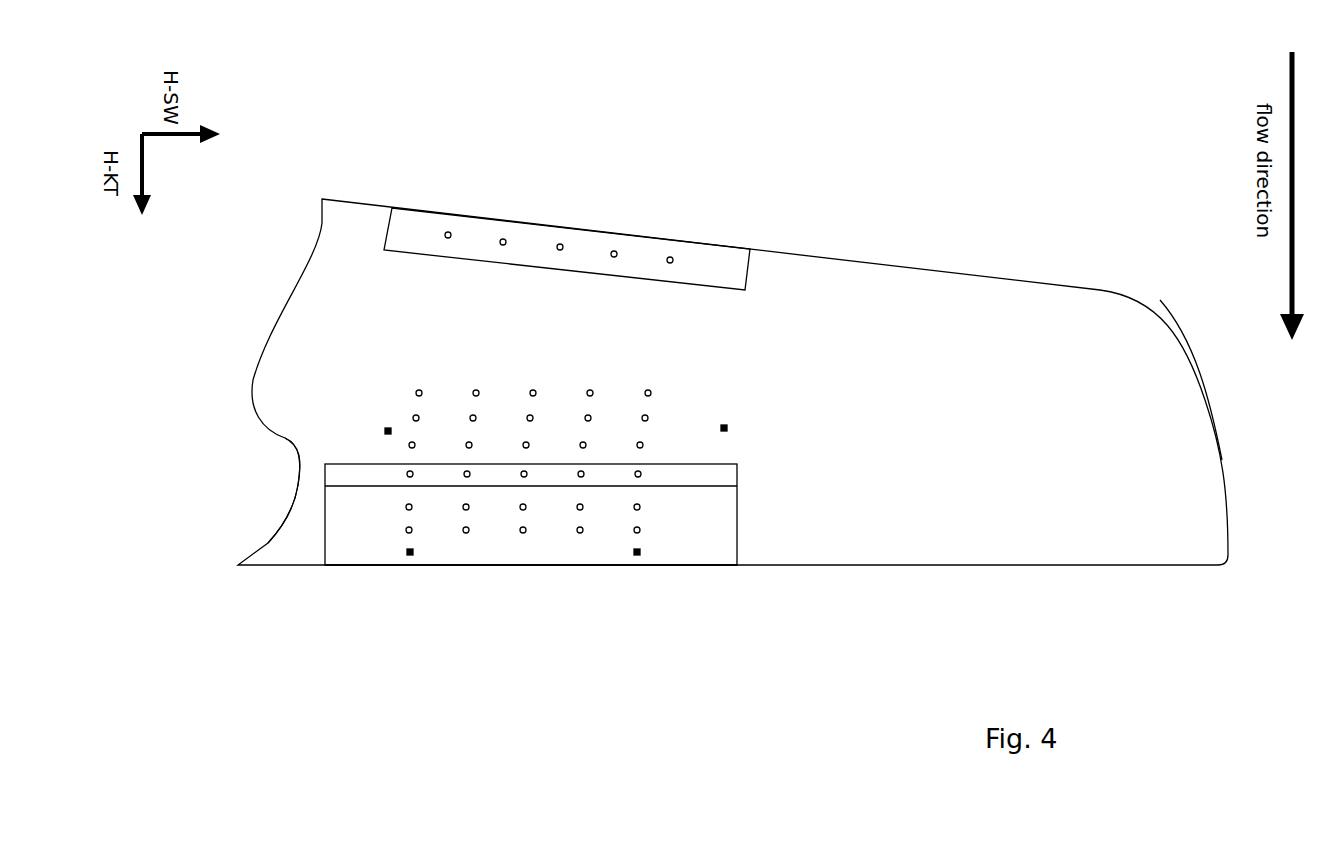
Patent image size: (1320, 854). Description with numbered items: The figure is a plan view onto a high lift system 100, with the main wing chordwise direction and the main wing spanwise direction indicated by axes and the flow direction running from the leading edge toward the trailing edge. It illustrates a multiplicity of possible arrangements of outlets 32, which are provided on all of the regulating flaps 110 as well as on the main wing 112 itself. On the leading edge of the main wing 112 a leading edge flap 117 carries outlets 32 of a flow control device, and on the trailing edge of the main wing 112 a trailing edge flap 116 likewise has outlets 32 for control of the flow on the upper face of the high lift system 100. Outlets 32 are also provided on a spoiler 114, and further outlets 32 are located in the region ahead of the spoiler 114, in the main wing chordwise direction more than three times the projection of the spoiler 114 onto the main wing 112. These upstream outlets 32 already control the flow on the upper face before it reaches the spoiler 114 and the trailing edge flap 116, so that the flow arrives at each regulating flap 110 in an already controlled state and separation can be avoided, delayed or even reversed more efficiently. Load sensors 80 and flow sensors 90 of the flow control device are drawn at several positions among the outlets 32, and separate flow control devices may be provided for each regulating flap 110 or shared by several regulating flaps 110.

The high lift system 100 is at (975, 228).
The regulating flap 110 is at (716, 252).
The main wing 112 is at (1090, 445).
The spoiler 114 is at (333, 470).
The trailing edge flap 116 is at (448, 565).
The leading-edge flap 117 is at (538, 233).
The outlet 32 is at (614, 257).
The load sensor 80 is at (388, 428).
The flow sensor 90 is at (410, 558).